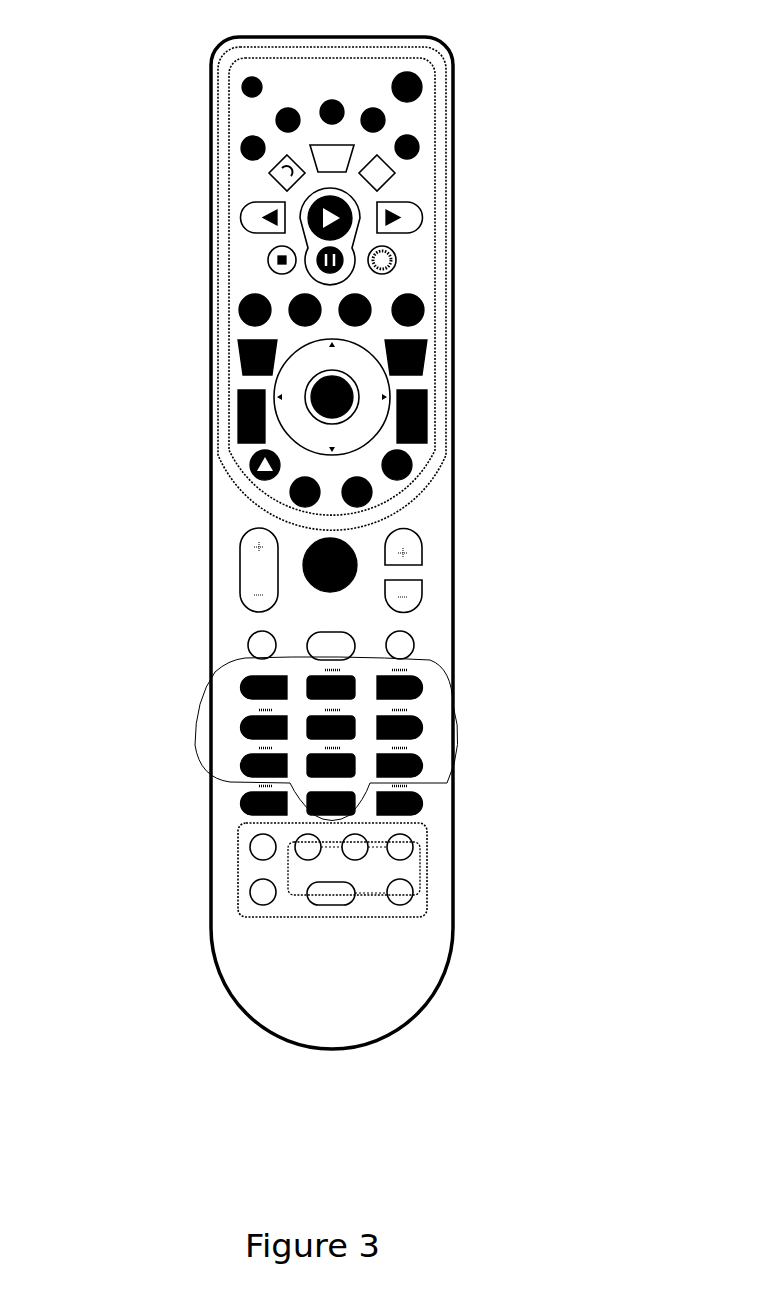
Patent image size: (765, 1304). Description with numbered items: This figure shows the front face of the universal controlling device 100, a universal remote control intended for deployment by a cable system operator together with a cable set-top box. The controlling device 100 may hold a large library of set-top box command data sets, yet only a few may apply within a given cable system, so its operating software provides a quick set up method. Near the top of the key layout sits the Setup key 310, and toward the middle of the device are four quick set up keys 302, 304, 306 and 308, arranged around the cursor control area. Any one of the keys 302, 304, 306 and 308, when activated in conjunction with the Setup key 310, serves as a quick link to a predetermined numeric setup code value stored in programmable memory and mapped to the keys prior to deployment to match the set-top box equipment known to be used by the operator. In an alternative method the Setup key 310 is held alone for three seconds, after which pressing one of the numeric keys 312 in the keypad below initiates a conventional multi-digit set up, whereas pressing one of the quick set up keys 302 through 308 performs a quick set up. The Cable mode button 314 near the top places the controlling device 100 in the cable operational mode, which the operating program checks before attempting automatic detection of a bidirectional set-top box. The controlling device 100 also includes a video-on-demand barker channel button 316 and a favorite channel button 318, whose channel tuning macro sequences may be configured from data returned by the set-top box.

The universal controlling device 100 is at (311, 611).
The quick set up key 302 is at (250, 472).
The quick set up key 304 is at (298, 503).
The quick set up key 306 is at (408, 477).
The quick set up key 308 is at (367, 502).
The Setup key 310 is at (245, 97).
The numeric keys 312 is at (460, 722).
The Cable mode button 314 is at (413, 158).
The video-on-demand barker channel button 316 is at (340, 593).
The favorite channel button 318 is at (307, 632).